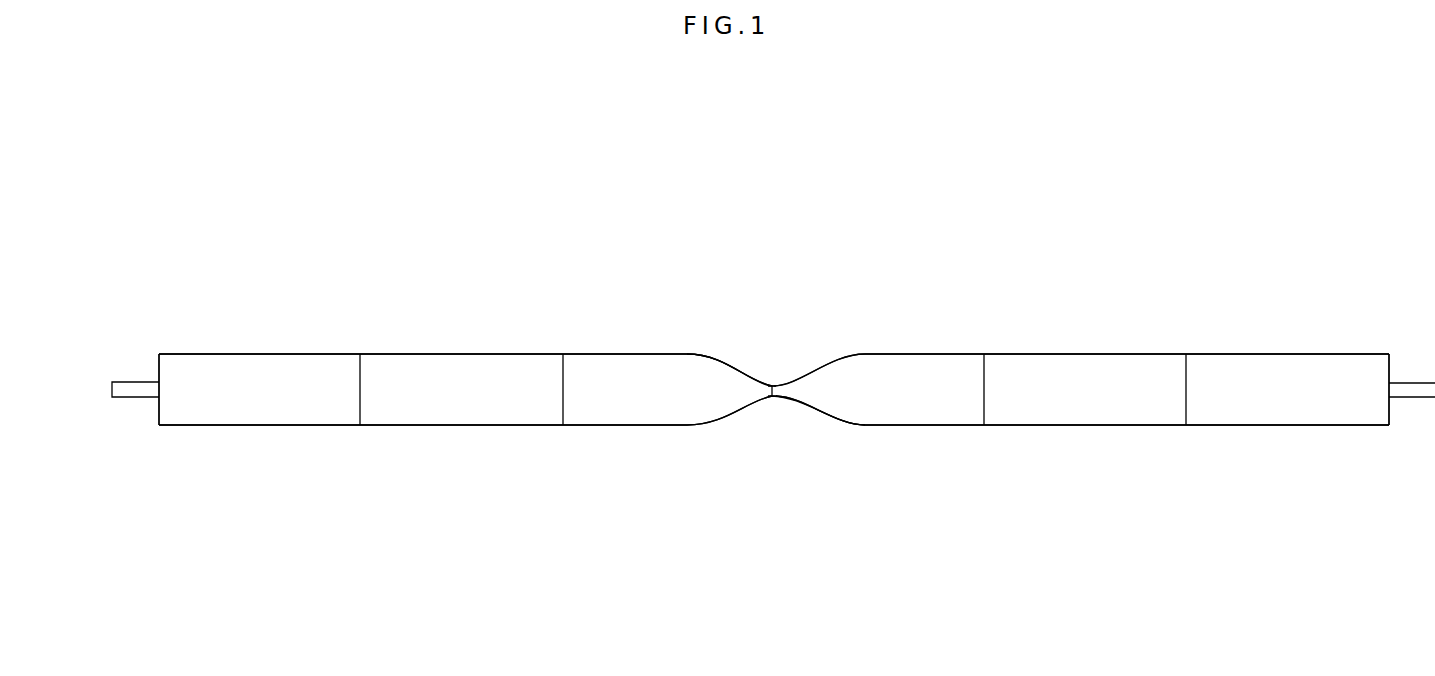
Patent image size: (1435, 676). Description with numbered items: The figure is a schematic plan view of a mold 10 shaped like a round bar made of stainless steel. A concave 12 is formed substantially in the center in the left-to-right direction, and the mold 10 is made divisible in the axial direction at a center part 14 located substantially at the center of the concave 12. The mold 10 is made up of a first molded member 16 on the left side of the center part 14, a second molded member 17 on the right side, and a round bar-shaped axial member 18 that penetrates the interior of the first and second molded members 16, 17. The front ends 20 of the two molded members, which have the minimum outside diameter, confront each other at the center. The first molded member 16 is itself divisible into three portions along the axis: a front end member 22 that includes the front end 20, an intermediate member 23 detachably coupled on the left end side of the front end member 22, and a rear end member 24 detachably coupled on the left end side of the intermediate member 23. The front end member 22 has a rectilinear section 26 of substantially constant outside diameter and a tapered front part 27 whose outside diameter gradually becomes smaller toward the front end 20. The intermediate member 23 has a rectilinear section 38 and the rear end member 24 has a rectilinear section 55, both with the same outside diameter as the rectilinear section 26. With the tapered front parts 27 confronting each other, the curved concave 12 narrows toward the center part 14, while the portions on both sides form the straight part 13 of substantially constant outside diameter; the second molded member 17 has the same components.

The mold 10 is at (703, 178).
The concave 12 is at (757, 351).
The straight part 13 is at (490, 329).
The center part 14 is at (770, 406).
The first molded member 16 is at (497, 484).
The second molded member 17 is at (1105, 506).
The axial member 18 is at (133, 400).
The front end 20 is at (772, 386).
The front end member 22 is at (611, 418).
The intermediate member 23 is at (430, 418).
The rear end member 24 is at (318, 418).
The rectilinear section 26 is at (604, 372).
The tapered front part 27 is at (701, 376).
The rectilinear section 38 is at (386, 371).
The rectilinear section 55 is at (255, 372).